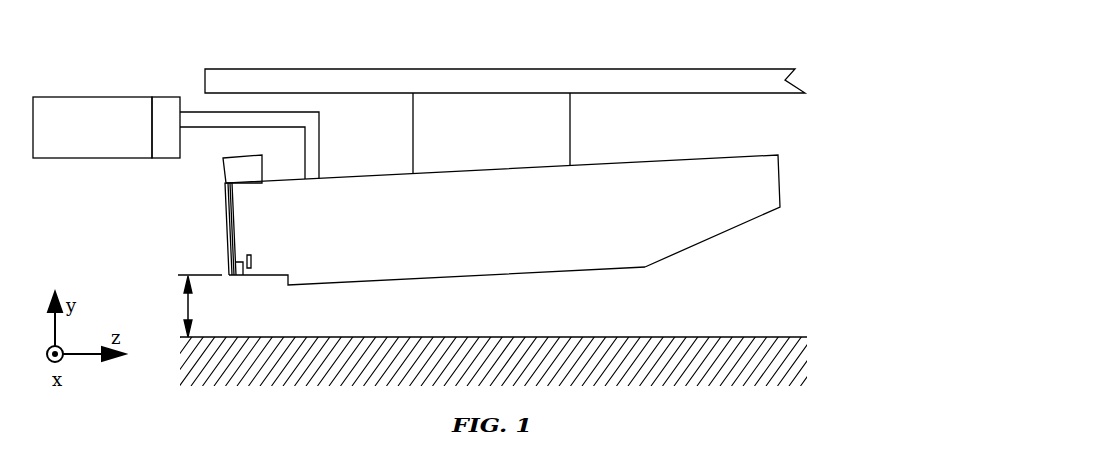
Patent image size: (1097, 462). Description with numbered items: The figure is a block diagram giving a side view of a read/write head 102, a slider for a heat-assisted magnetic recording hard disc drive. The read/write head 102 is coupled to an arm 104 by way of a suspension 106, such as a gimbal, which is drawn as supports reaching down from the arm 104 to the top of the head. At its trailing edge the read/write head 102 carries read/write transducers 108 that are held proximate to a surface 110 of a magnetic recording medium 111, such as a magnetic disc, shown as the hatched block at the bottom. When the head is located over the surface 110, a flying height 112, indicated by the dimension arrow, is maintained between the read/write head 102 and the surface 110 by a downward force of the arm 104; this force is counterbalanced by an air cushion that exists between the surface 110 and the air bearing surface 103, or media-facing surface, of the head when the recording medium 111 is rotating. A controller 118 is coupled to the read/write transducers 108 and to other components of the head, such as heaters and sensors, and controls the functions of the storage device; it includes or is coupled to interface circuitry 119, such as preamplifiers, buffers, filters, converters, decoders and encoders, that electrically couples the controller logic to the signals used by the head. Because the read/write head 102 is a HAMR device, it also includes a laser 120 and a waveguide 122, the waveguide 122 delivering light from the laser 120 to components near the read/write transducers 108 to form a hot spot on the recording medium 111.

The read/write head 102 is at (683, 167).
The air bearing surface 103 is at (373, 283).
The arm 104 is at (730, 75).
The suspension 106 is at (570, 127).
The read/write transducers 108 is at (232, 255).
The surface 110 is at (687, 337).
The magnetic recording medium 111 is at (700, 375).
The flying height 112 is at (186, 306).
The controller 118 is at (88, 96).
The interface circuitry 119 is at (163, 96).
The laser 120 is at (242, 163).
The waveguide 122 is at (228, 202).